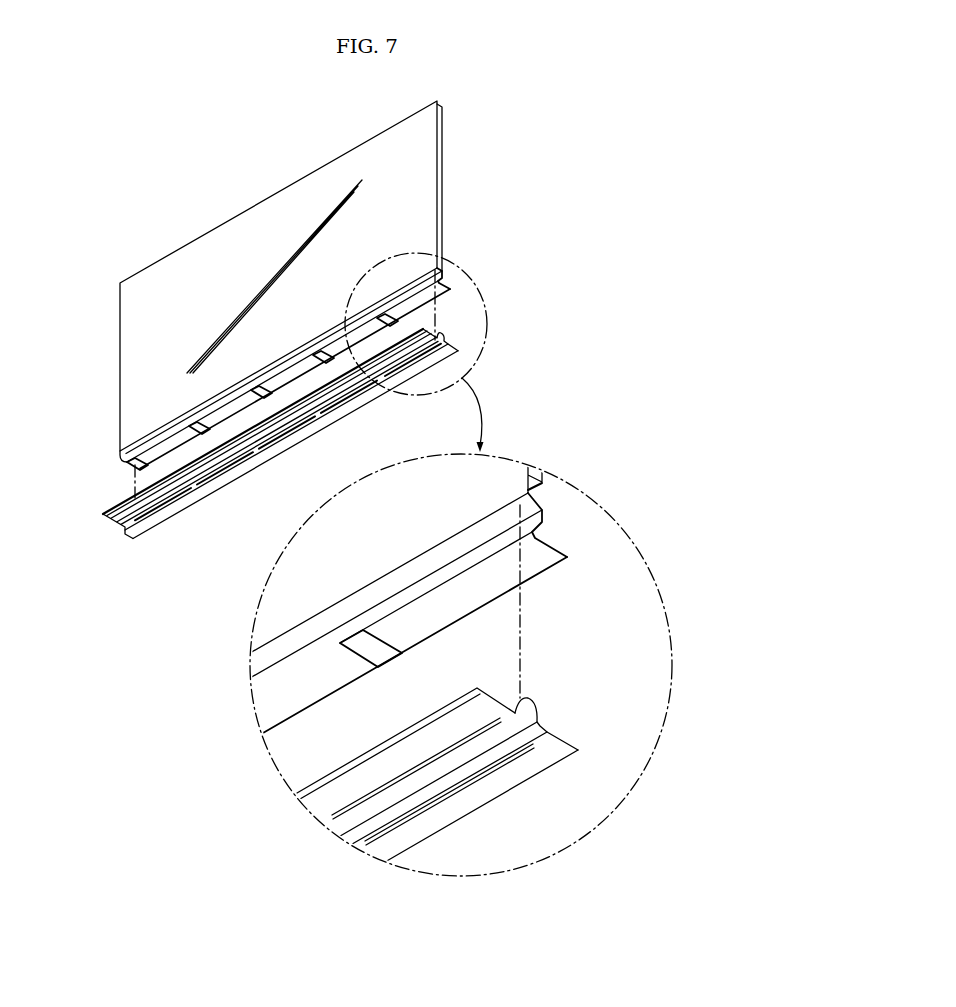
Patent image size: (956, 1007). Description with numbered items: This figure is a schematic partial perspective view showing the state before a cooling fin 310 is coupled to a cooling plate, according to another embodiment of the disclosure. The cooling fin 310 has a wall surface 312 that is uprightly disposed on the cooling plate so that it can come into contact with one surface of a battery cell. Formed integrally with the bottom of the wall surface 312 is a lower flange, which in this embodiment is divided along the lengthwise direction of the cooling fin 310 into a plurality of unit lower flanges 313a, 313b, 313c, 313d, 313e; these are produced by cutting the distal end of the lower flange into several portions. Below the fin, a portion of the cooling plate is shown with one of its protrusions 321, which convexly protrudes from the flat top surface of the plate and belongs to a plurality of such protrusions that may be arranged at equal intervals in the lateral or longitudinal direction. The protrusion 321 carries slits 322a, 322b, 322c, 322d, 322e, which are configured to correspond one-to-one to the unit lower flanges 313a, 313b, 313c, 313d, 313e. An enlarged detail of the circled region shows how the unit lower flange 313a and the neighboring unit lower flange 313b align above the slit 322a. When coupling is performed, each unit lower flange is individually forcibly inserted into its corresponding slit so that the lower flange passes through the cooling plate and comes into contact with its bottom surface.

The cooling fin 310 is at (461, 137).
The wall surface 312 is at (240, 233).
The unit lower flange 313a is at (412, 300).
The unit lower flange 313b is at (336, 345).
The unit lower flange 313c is at (260, 377).
The unit lower flange 313d is at (230, 413).
The unit lower flange 313e is at (163, 445).
The protrusion 321 is at (485, 312).
The slit 322a is at (400, 367).
The slit 322b is at (336, 404).
The slit 322c is at (274, 440).
The slit 322d is at (212, 476).
The slit 322e is at (150, 512).